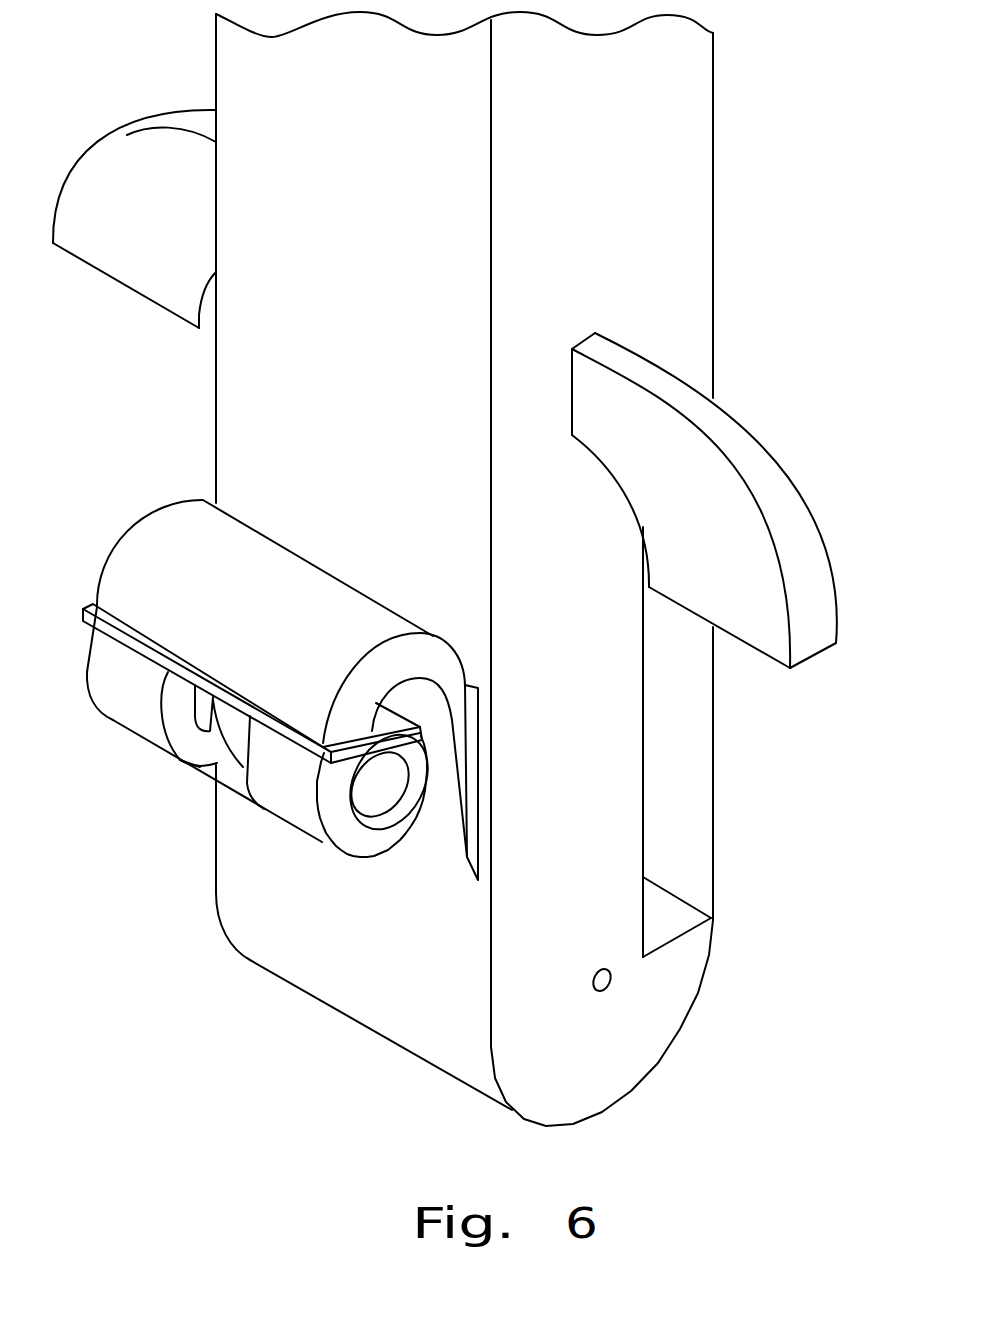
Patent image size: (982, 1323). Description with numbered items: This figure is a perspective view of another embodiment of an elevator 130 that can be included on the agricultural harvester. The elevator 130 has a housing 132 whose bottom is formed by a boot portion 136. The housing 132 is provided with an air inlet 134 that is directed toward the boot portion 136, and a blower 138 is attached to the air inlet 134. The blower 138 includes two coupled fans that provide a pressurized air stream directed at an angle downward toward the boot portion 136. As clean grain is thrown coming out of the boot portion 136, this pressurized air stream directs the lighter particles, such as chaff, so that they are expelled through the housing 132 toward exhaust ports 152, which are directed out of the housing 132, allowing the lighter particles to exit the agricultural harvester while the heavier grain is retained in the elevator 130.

The elevator 130 is at (768, 170).
The housing 132 is at (698, 268).
The air inlet 134 is at (444, 836).
The boot portion 136 is at (605, 1035).
The blower 138 is at (208, 767).
The exhaust ports 152 is at (120, 283).